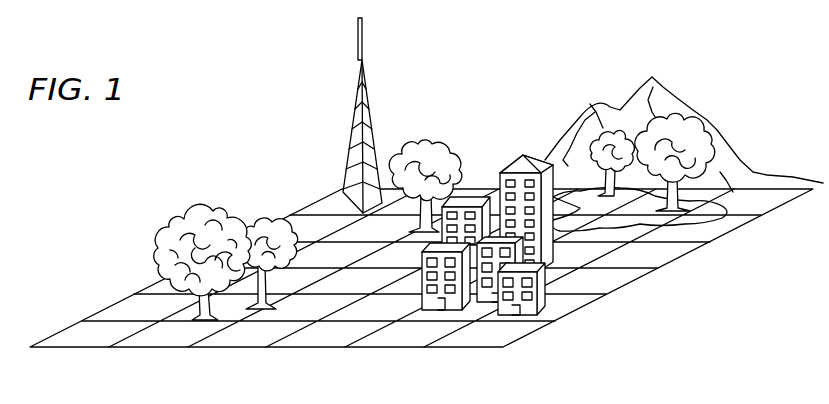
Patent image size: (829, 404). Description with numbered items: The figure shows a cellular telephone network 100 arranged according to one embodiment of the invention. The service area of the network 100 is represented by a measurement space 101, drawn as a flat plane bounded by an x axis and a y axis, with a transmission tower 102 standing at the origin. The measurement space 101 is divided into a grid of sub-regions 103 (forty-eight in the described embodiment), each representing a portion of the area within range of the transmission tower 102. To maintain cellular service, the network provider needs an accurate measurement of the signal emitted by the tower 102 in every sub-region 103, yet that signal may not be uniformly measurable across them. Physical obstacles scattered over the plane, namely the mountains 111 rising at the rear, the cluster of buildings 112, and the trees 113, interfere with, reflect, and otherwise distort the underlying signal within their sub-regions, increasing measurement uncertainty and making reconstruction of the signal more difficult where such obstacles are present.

The network 100 is at (189, 80).
The measurement space 101 is at (486, 333).
The transmission tower 102 is at (358, 40).
The sub-regions 103 is at (517, 327).
The mountains 111 is at (660, 83).
The buildings 112 is at (520, 157).
The trees 113 is at (437, 146).